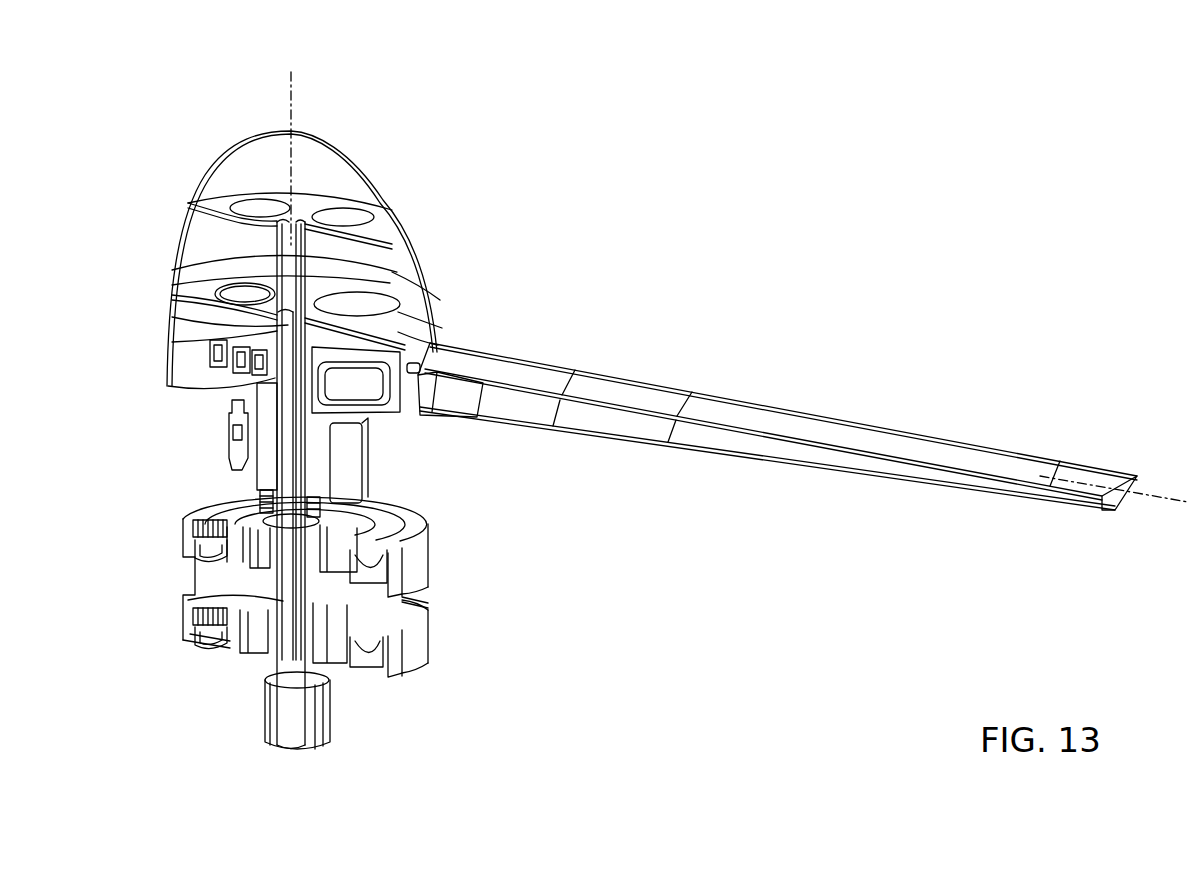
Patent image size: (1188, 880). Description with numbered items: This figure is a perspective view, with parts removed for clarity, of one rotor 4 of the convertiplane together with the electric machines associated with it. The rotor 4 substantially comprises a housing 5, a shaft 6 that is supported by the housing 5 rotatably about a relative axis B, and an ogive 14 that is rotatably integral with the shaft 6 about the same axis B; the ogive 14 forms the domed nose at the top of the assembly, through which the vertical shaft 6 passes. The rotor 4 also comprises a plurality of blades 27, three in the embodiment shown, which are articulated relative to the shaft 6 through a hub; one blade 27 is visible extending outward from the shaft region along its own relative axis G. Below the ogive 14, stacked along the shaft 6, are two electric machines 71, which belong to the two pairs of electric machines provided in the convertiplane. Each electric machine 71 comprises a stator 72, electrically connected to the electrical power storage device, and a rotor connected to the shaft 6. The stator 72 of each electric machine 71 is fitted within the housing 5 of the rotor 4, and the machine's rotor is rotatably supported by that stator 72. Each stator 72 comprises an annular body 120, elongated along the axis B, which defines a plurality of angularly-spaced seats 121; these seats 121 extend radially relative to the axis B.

The rotor 4 is at (475, 252).
The housing 5 is at (415, 558).
The shaft 6 is at (290, 322).
The ogive 14 is at (383, 196).
The blade 27 is at (608, 394).
The electric machine 71 is at (323, 600).
The stator 72 is at (213, 560).
The annular body 120 is at (393, 577).
The seats 121 is at (223, 525).
The axis B is at (291, 78).
The axis G is at (1187, 517).